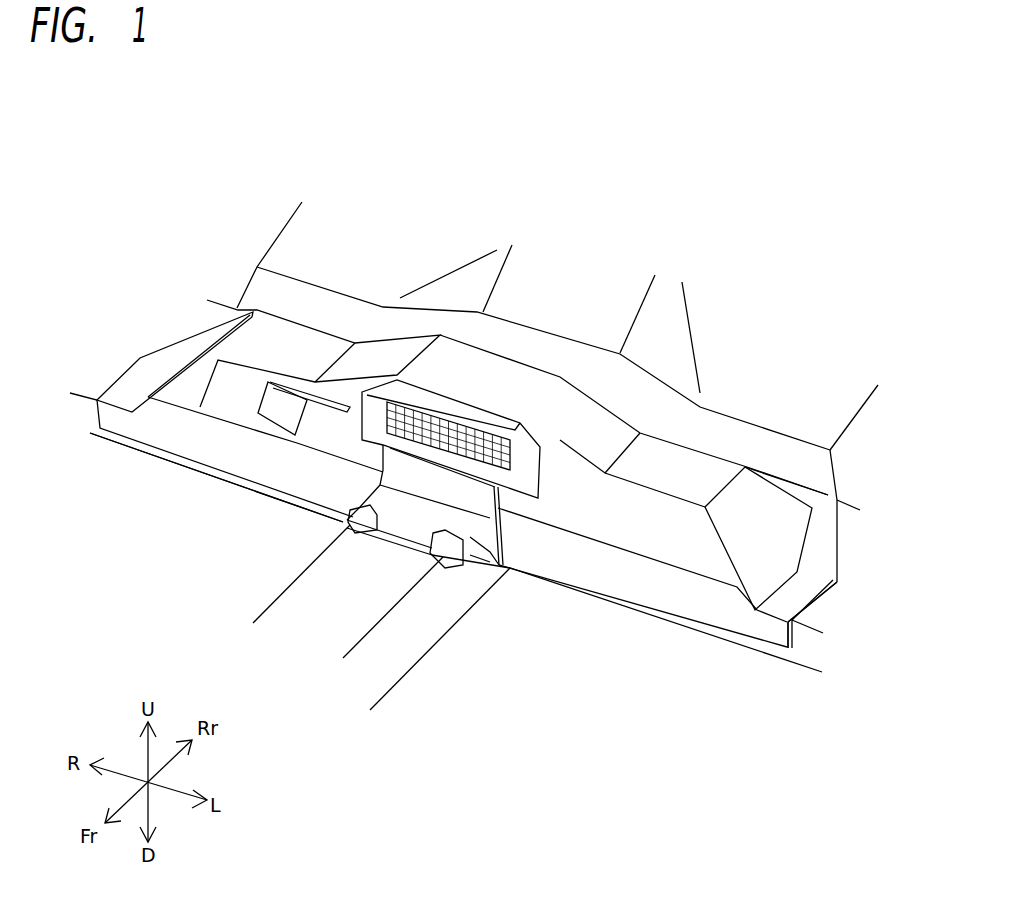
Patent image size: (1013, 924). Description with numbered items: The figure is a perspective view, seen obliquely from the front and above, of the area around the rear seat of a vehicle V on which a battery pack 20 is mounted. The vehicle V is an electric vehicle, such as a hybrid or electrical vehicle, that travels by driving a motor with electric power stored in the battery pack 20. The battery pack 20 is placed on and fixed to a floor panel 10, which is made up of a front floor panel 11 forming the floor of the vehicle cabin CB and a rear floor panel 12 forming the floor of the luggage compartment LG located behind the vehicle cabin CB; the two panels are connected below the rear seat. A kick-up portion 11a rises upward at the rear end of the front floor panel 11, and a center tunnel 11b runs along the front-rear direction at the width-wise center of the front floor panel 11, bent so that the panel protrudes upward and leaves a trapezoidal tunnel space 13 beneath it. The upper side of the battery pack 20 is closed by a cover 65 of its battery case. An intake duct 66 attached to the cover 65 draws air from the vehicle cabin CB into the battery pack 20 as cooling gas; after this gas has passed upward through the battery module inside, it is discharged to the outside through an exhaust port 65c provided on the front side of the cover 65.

The vehicle V is at (163, 160).
The floor panel 10 is at (809, 669).
The front floor panel 11 is at (533, 668).
The kick-up portion 11a is at (801, 646).
The center tunnel 11b is at (293, 613).
The rear floor panel 12 is at (567, 265).
The tunnel space 13 is at (335, 602).
The battery pack 20 is at (173, 277).
The cover 65 is at (471, 509).
The exhaust port 65c is at (390, 547).
The intake duct 66 is at (323, 438).
The luggage compartment LG is at (765, 275).
The vehicle cabin CB is at (614, 670).